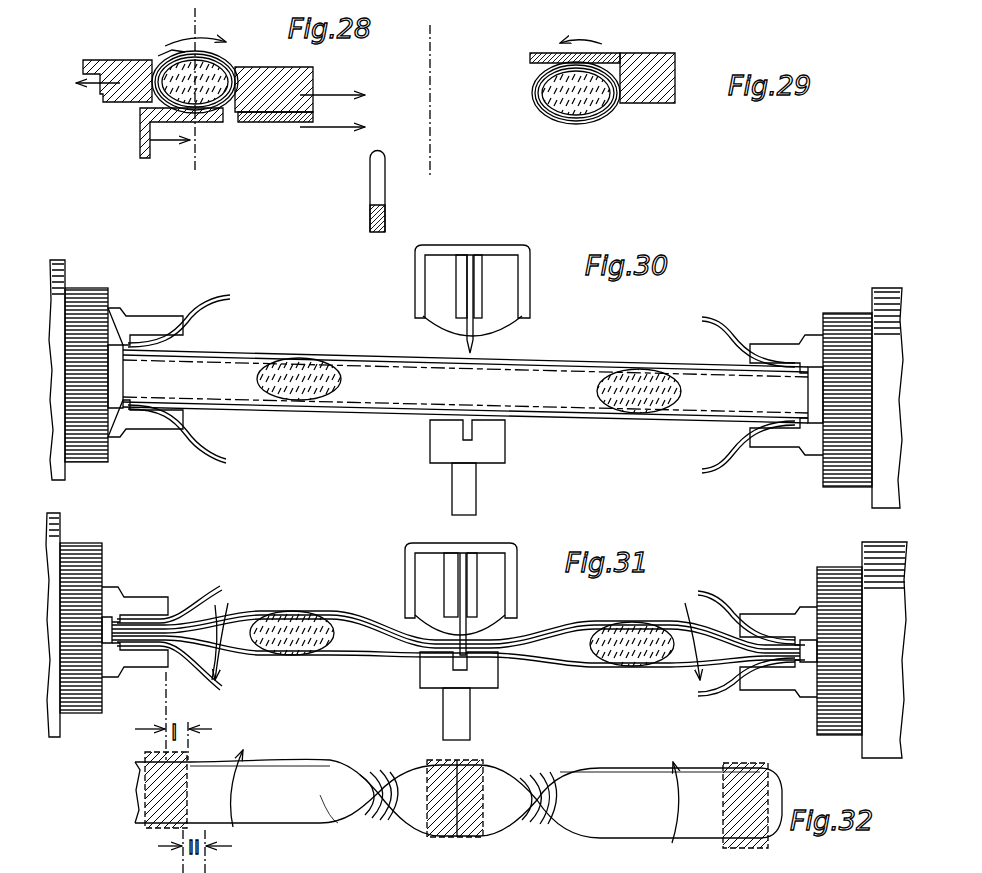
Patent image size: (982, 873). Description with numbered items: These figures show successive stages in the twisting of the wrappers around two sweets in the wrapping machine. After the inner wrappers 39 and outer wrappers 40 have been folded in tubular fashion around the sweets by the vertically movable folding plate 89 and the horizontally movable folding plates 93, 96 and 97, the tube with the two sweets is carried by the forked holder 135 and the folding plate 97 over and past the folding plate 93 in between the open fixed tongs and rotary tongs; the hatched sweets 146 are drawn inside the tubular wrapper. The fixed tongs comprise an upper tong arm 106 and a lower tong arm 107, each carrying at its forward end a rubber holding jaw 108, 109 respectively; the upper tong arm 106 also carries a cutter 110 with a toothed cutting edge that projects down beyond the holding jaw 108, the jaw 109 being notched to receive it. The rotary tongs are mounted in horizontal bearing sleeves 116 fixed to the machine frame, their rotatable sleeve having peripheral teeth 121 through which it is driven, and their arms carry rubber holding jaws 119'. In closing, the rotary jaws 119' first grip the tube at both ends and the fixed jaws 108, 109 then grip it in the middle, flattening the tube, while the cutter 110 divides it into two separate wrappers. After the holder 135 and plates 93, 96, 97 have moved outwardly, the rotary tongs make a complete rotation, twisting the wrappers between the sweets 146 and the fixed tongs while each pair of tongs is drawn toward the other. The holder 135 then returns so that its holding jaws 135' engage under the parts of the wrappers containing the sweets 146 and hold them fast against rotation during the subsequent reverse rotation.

In FIG. 29, the forked holder 135 is at (557, 45).
In FIG. 28, the holding jaws 135' is at (117, 66).
In FIG. 29, the holding jaws 135' is at (648, 65).
In FIG. 28, the filled tubular bead / casing section 146 is at (215, 85).
In FIG. 29, the filled tubular bead / casing section 146 is at (600, 97).
In FIG. 30, the filled tubular bead / casing section 146 is at (300, 395).
In FIG. 31, the filled tubular bead / casing section 146 is at (296, 622).
In FIG. 32, the filled tubular bead / casing section 146 is at (318, 800).
In FIG. 28, the horizontally movable folding plate 93 is at (150, 124).
In FIG. 28, the folding plate 97 is at (295, 98).
In FIG. 28, the folding plate 96 is at (332, 125).
In FIG. 28, the vertically movable folding plate 89 is at (388, 208).
In FIG. 30, the bearing sleeves 116 is at (68, 272).
In FIG. 31, the bearing sleeves 116 is at (880, 560).
In FIG. 30, the teeth 121 is at (140, 292).
In FIG. 31, the teeth 121 is at (110, 575).
In FIG. 30, the rubber holding jaws 119' is at (465, 372).
In FIG. 31, the rubber holding jaws 119' is at (456, 643).
In FIG. 32, the rubber holding jaws 119' is at (475, 800).
In FIG. 30, the outer wrappers 40 is at (295, 350).
In FIG. 31, the outer wrappers 40 is at (456, 639).
In FIG. 32, the outer wrappers 40 is at (458, 799).
In FIG. 30, the inner wrappers 39 is at (465, 368).
In FIG. 32, the inner wrappers 39 is at (290, 785).
In FIG. 30, the upper tong arm 106 is at (446, 283).
In FIG. 31, the upper tong arm 106 is at (438, 584).
In FIG. 30, the rubber holding jaw 108 is at (430, 281).
In FIG. 31, the rubber holding jaw 108 is at (430, 565).
In FIG. 32, the rubber holding jaw 108 is at (513, 785).
In FIG. 30, the cutter 110 is at (465, 343).
In FIG. 31, the cutter 110 is at (460, 600).
In FIG. 30, the rubber holding jaw 109 is at (440, 437).
In FIG. 31, the rubber holding jaw 109 is at (435, 670).
In FIG. 32, the rubber holding jaw 109 is at (478, 770).
In FIG. 30, the lower tong arm 107 is at (470, 484).
In FIG. 31, the lower tong arm 107 is at (460, 712).